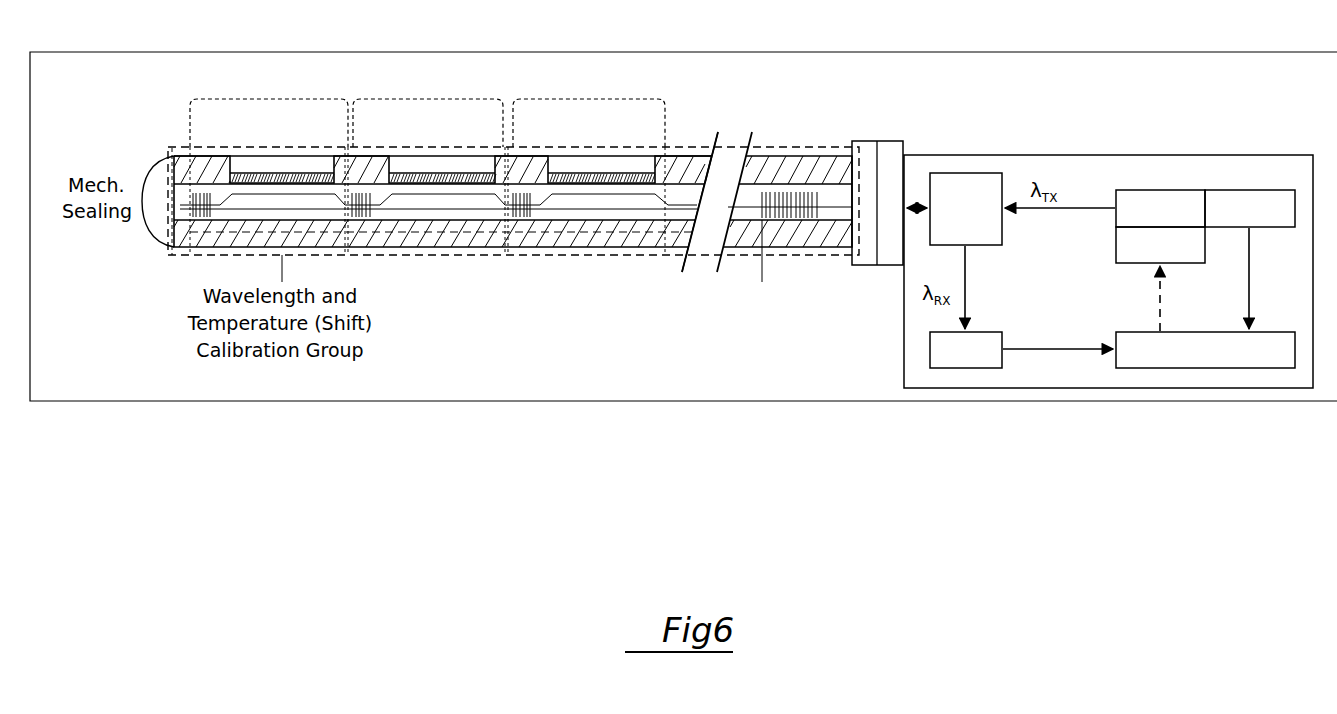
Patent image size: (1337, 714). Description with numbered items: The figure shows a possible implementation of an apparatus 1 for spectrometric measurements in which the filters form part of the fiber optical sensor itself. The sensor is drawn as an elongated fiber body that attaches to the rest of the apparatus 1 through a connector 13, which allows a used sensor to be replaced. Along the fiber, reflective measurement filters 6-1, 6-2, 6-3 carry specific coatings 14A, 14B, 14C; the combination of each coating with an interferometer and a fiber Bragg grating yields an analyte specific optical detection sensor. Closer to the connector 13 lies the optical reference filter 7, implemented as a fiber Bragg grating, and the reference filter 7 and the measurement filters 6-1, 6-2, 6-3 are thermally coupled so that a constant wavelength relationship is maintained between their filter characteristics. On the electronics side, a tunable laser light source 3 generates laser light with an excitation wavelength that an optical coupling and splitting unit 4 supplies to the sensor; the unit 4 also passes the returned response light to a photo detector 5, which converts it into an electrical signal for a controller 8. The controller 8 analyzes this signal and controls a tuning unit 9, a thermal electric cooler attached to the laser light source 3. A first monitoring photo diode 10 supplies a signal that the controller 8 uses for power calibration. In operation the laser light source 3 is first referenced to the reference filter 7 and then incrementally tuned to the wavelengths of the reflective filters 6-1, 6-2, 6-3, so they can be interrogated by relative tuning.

The apparatus 1 is at (1170, 84).
The tunable laser light source 3 is at (1168, 206).
The optical coupling and splitting unit 4 is at (972, 190).
The photo detector 5 is at (988, 344).
The reflective measurement filter 6-1 is at (528, 118).
The reflective measurement filter 6-2 is at (366, 118).
The reflective measurement filter 6-3 is at (212, 113).
The optical reference filter 7 is at (778, 200).
The controller 8 is at (1258, 347).
The tuning unit 9 is at (1194, 248).
The first monitoring photo diode 10 is at (1242, 202).
The connector 13 is at (878, 162).
The specific coating 14A is at (602, 173).
The specific coating 14B is at (443, 173).
The specific coating 14C is at (283, 173).